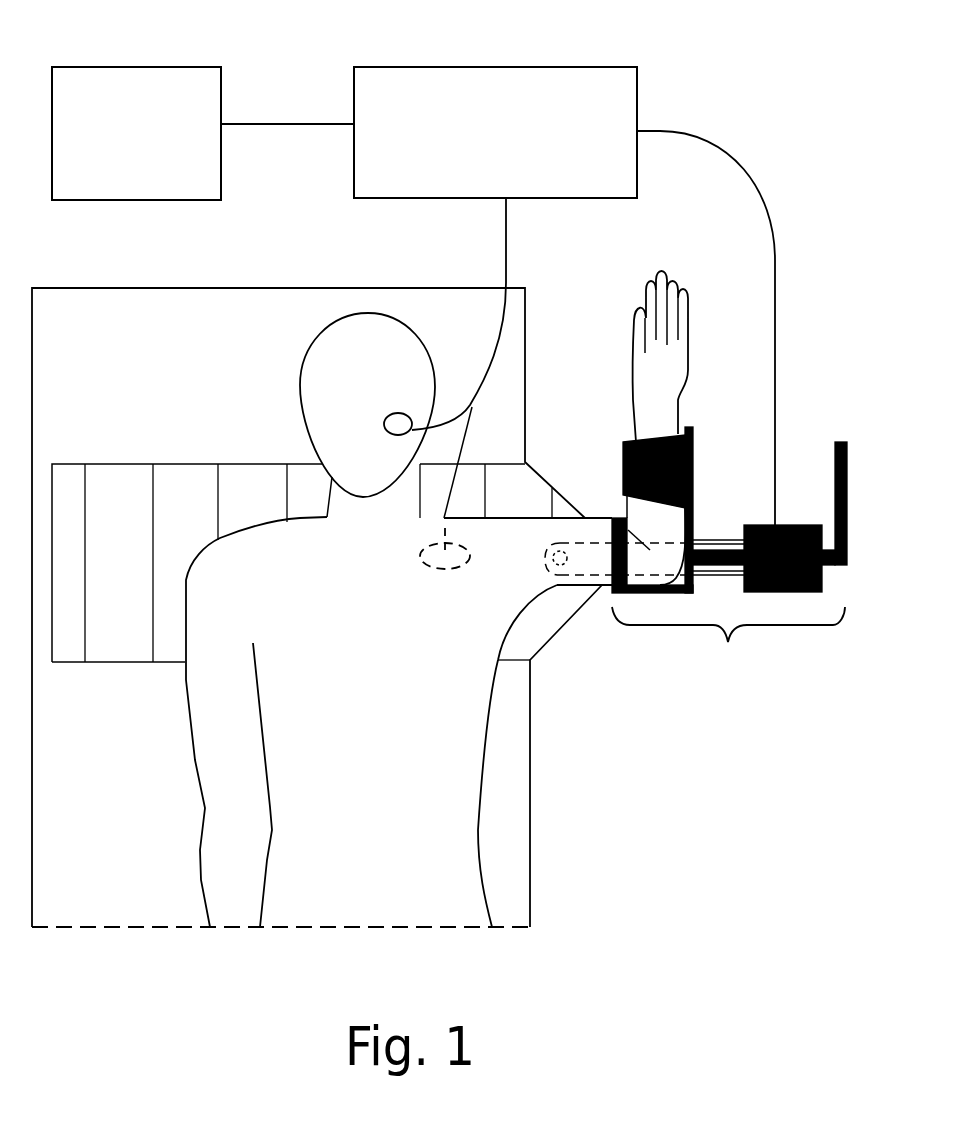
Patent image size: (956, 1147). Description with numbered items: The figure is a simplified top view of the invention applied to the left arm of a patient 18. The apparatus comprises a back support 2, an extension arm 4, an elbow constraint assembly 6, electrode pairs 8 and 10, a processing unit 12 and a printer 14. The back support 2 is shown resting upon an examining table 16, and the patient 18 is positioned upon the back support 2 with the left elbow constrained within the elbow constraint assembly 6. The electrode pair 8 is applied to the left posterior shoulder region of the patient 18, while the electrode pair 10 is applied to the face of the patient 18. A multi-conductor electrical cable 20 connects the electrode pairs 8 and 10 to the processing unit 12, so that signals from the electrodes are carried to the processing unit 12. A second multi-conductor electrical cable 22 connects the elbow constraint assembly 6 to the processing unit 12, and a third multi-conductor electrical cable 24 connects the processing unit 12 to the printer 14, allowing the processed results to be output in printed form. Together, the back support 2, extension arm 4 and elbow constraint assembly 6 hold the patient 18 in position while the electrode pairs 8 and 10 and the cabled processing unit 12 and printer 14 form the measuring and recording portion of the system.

The back support 2 is at (92, 498).
The extension arm 4 is at (577, 560).
The elbow constraint assembly 6 is at (728, 648).
The electrode pair 8 is at (437, 562).
The electrode pair 10 is at (390, 432).
The processing unit 12 is at (470, 98).
The printer 14 is at (120, 100).
The examining table 16 is at (72, 315).
The patient 18 is at (448, 810).
The multi-conductor electrical cable 20 is at (505, 258).
The multi-conductor electrical cable 22 is at (778, 365).
The multi-conductor electrical cable 24 is at (255, 122).